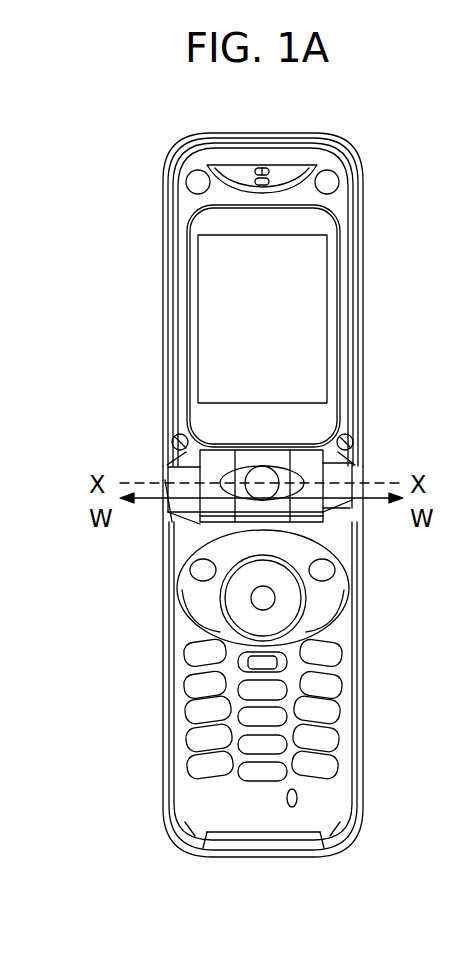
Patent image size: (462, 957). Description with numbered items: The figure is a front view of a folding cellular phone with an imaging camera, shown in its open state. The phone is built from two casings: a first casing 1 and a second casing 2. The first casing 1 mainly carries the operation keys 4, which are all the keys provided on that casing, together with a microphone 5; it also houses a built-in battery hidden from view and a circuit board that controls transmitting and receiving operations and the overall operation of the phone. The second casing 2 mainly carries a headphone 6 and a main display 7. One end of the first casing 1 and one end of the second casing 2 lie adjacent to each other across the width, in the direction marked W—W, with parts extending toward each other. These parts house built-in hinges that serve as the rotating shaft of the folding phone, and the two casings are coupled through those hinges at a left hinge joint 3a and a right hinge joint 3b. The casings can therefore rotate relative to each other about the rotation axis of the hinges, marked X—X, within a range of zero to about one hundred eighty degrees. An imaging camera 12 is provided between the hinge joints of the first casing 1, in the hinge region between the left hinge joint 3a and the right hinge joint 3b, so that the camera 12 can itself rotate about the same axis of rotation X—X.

The first casing 1 is at (207, 802).
The second casing 2 is at (190, 202).
The left hinge joint 3a is at (170, 466).
The right hinge joint 3b is at (333, 506).
The operation keys 4 is at (280, 598).
The microphone 5 is at (298, 798).
The headphone 6 is at (268, 170).
The main display 7 is at (313, 287).
The imaging camera 12 is at (266, 478).